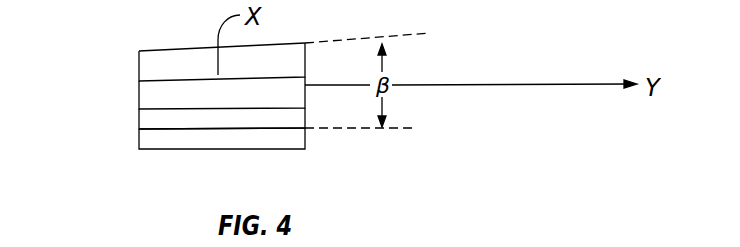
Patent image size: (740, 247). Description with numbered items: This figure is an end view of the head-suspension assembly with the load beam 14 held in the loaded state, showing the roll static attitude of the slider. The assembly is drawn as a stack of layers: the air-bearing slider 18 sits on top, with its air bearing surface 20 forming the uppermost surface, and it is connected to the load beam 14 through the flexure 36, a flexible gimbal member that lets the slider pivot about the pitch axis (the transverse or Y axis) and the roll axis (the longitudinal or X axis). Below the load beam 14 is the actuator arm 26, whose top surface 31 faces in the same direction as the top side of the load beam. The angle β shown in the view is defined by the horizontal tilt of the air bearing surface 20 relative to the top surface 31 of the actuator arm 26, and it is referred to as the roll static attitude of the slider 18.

The load beam 14 is at (138, 118).
The air-bearing slider 18 is at (138, 62).
The air bearing surface 20 is at (186, 47).
The actuator arm 26 is at (138, 143).
The top surface 31 is at (280, 129).
The flexure 36 is at (138, 95).